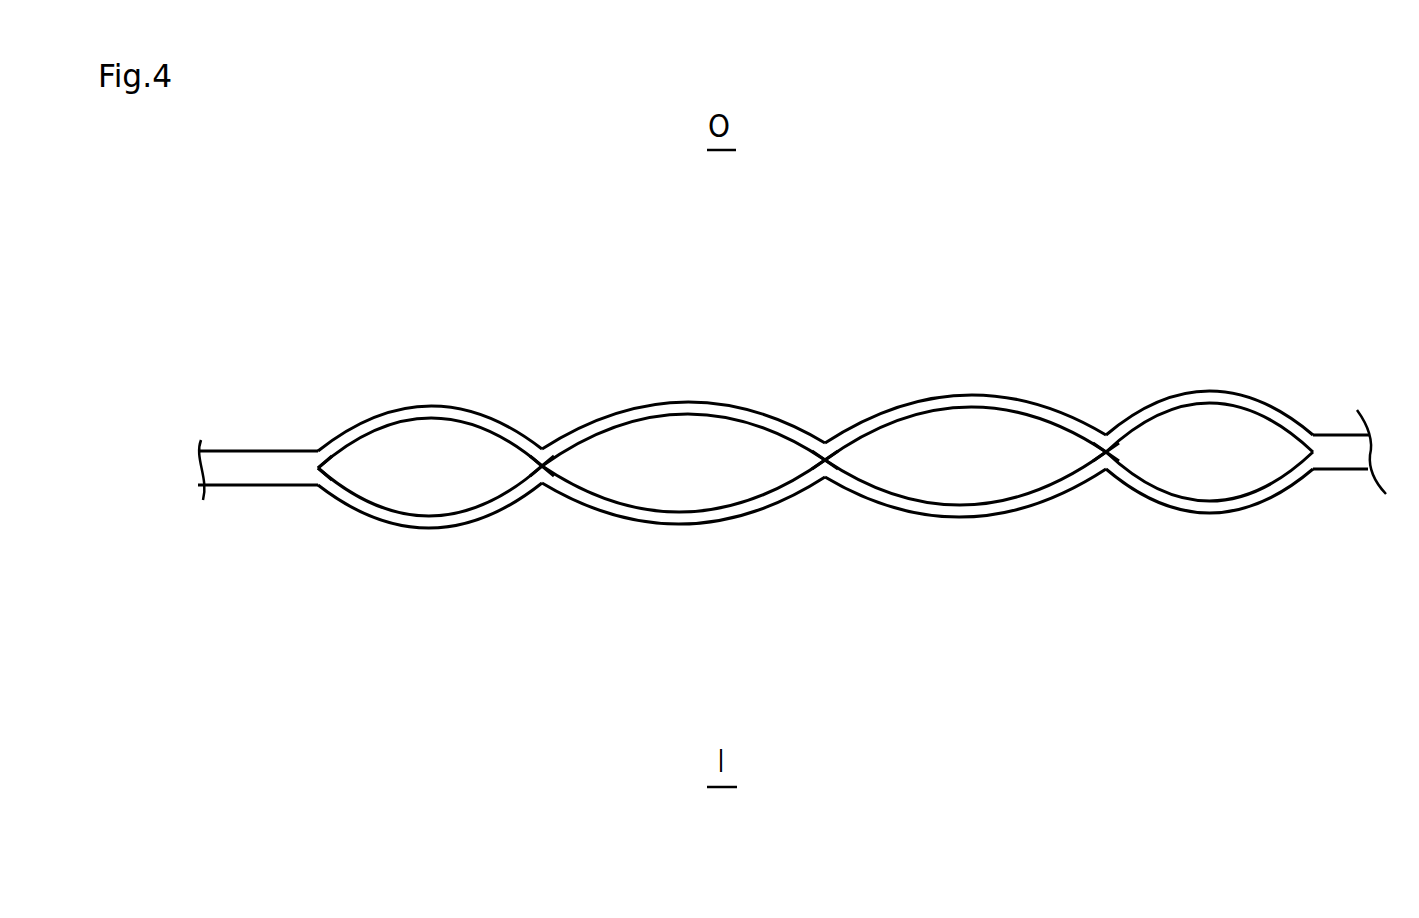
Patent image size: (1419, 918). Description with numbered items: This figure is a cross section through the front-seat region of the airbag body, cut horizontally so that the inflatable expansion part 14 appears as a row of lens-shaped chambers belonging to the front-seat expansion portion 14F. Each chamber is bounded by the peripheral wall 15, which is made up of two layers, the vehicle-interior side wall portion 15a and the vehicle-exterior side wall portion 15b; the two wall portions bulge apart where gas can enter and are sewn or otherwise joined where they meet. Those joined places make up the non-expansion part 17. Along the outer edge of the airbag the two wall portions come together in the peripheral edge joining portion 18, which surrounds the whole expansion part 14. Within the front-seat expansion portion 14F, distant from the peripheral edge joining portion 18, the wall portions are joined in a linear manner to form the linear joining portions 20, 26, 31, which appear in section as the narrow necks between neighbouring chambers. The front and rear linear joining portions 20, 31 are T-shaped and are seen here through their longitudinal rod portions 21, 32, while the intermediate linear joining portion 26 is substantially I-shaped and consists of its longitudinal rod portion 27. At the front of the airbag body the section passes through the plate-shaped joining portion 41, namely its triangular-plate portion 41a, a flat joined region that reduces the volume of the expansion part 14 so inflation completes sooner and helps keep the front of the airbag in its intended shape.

The expansion part 14 is at (784, 443).
The front-seat expansion portion 14F is at (1002, 373).
The peripheral wall 15 is at (763, 268).
The vehicle-interior side wall portion 15a is at (715, 508).
The vehicle-exterior side wall portion 15b is at (650, 410).
The non-expansion part 17 is at (1327, 470).
The peripheral edge joining portion 18 is at (318, 480).
The linear joining portion 20 is at (531, 569).
The longitudinal rod portion 21 is at (545, 480).
The linear joining portion 26 is at (816, 565).
The longitudinal rod portion 27 is at (826, 476).
The linear joining portion 31 is at (1101, 561).
The longitudinal rod portion 32 is at (1108, 468).
The plate-shaped joining portion 41 is at (250, 549).
The triangular-plate portion 41a is at (240, 478).